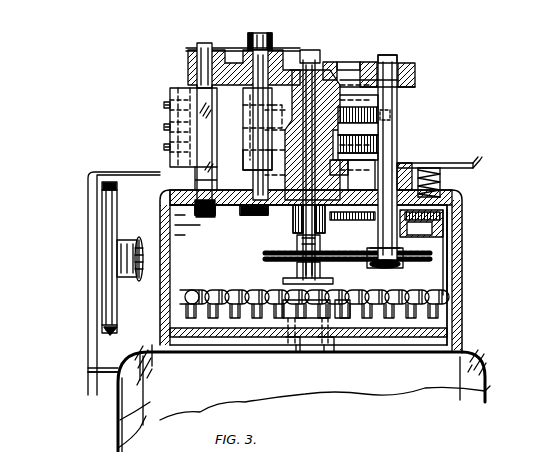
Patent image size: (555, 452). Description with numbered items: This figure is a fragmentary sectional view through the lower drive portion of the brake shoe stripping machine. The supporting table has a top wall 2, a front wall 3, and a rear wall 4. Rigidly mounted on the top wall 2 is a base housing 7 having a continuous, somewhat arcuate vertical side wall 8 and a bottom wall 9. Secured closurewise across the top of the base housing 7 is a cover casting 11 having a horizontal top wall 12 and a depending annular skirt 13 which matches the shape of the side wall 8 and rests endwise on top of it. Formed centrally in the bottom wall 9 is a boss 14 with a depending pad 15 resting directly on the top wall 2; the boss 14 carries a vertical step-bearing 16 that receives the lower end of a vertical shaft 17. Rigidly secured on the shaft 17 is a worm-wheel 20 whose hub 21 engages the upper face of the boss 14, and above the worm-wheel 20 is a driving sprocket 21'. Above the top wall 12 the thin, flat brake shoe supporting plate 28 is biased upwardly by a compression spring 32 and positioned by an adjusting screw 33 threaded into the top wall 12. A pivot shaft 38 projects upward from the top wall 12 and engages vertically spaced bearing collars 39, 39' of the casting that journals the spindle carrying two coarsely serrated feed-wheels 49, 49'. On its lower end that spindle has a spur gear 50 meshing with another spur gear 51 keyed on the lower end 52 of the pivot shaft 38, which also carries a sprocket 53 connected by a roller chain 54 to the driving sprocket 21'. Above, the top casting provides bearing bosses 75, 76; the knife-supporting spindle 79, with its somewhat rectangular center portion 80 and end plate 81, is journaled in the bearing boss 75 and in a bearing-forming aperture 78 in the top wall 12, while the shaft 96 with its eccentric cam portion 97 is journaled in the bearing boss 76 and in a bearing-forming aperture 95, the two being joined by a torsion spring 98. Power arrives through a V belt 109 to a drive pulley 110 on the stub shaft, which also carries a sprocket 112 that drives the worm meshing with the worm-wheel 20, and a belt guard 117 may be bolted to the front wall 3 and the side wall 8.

The top wall 2 is at (186, 350).
The front wall 3 is at (116, 408).
The rear wall 4 is at (490, 390).
The base housing 7 is at (462, 290).
The side wall 8 is at (160, 226).
The bottom wall 9 is at (365, 332).
The cover casting 11 is at (462, 204).
The horizontal top wall 12 is at (172, 188).
The depending annular skirt 13 is at (462, 230).
The boss 14 is at (286, 328).
The depending pad 15 is at (322, 352).
The vertical step-bearing 16 is at (292, 352).
The vertical shaft 17 is at (297, 270).
The worm-wheel 20 is at (214, 288).
The hub 21 is at (351, 313).
The driving sprocket 21' is at (276, 243).
The brake shoe supporting plate 28 is at (478, 162).
The compression spring 32 is at (441, 180).
The adjusting screw 33 is at (398, 160).
The pivot shaft 38 is at (398, 108).
The bearing collar 39 is at (393, 67).
The bearing collar 39' is at (438, 157).
The coarsely serrated feed-wheel 49 is at (358, 115).
The coarsely serrated feed-wheel 49' is at (358, 144).
The spur gear 50 is at (292, 228).
The spur gear 51 is at (448, 232).
The lower end 52 is at (400, 266).
The sprocket 53 is at (404, 254).
The roller chain 54 is at (333, 262).
The bearing boss 75 is at (188, 60).
The bearing boss 76 is at (270, 55).
The bearing-forming aperture 78 is at (208, 210).
The knife-supporting spindle 79 is at (198, 44).
The center portion 80 is at (212, 174).
The end plate 81 is at (170, 100).
The bearing-forming aperture 95 is at (248, 168).
The shaft 96 is at (265, 32).
The eccentric cam portion 97 is at (246, 100).
The torsion spring 98 is at (232, 48).
The V belt 109 is at (104, 332).
The drive pulley 110 is at (104, 218).
The sprocket 112 is at (130, 280).
The belt guard 117 is at (88, 195).